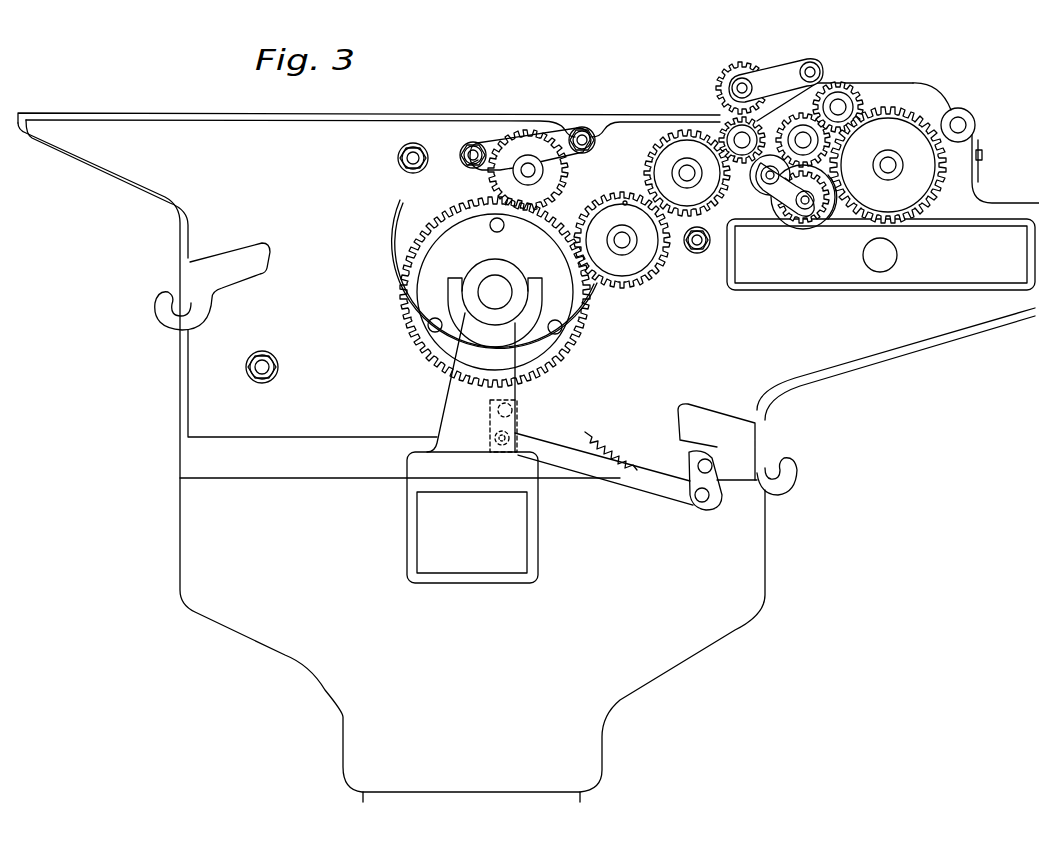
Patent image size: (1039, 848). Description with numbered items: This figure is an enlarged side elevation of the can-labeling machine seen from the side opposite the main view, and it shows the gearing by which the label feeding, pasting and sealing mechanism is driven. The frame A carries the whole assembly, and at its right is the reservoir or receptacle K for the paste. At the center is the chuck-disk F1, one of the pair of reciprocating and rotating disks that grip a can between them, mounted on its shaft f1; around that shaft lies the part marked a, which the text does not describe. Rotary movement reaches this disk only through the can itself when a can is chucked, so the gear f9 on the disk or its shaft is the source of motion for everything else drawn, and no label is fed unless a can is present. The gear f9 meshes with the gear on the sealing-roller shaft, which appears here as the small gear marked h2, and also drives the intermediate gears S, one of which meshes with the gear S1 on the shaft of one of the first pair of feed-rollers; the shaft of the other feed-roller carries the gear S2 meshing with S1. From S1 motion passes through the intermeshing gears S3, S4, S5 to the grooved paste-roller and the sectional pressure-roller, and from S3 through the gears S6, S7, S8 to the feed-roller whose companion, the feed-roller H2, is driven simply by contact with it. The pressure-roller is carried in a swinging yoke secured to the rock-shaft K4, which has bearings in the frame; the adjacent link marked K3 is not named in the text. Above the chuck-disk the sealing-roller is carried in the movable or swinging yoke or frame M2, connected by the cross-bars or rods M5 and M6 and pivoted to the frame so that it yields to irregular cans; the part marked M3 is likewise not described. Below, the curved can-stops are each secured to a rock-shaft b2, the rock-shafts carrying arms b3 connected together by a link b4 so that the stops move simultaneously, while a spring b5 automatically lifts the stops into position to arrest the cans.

The frame A is at (528, 442).
The feed-roller H2 is at (982, 188).
The paste reservoir K is at (881, 254).
The link pivot K3 is at (800, 193).
The rock-shaft K4 is at (767, 177).
The chuck-disk F1 is at (572, 352).
The gear f9 is at (575, 326).
The chuck-disk shaft f1 is at (495, 292).
The yoke a is at (533, 309).
The rock-shaft b2 is at (706, 462).
The arm b3 is at (520, 422).
The link b4 is at (622, 488).
The spring b5 is at (608, 440).
The gear h2 is at (568, 188).
The swinging yoke M2 is at (530, 156).
The pivot M3 is at (466, 168).
The cross-bar M5 is at (476, 143).
The cross-bar M6 is at (583, 127).
The intermediate gear S is at (660, 268).
The feed-roller gear S1 is at (722, 122).
The feed-roller gear S2 is at (753, 85).
The gear S3 is at (760, 195).
The gear S4 is at (818, 218).
The gear S5 is at (791, 218).
The gear S6 is at (806, 120).
The gear S7 is at (853, 86).
The gear S8 is at (910, 108).